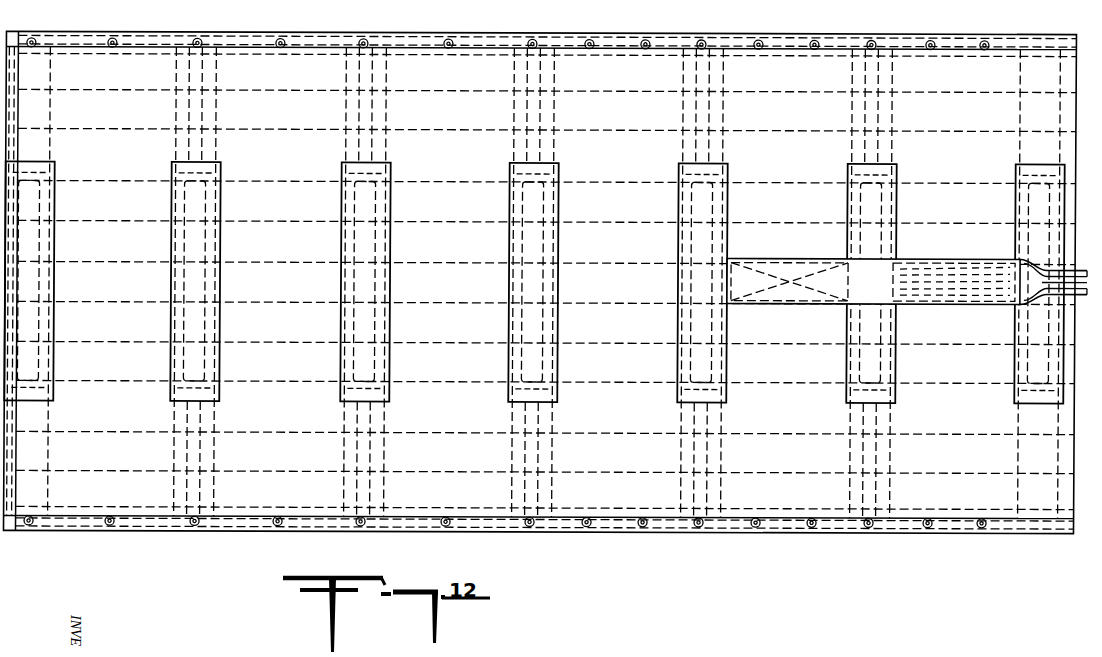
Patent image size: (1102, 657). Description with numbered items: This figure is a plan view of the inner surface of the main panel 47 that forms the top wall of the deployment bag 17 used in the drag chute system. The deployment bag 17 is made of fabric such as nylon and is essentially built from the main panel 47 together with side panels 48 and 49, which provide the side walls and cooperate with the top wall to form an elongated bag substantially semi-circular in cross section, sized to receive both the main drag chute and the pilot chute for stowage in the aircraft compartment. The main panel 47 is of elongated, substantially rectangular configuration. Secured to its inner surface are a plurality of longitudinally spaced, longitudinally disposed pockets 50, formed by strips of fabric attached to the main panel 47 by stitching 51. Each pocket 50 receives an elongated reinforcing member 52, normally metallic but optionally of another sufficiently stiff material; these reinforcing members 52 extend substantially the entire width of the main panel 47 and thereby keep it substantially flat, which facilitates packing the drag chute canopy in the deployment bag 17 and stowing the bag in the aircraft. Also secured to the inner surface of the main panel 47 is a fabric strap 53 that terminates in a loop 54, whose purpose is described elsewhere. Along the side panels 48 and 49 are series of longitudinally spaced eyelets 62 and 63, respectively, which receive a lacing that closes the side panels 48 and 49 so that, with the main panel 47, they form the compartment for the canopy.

The deployment bag 17 is at (639, 537).
The main panel 47 is at (630, 292).
The side panel 48 is at (634, 119).
The side panel 49 is at (632, 461).
The pocket 50 is at (220, 240).
The stitching 51 is at (215, 278).
The reinforcing member 52 is at (186, 248).
The fabric strap 53 is at (915, 258).
The loop 54 is at (1082, 293).
The eyelets 62 is at (645, 39).
The eyelets 63 is at (757, 528).